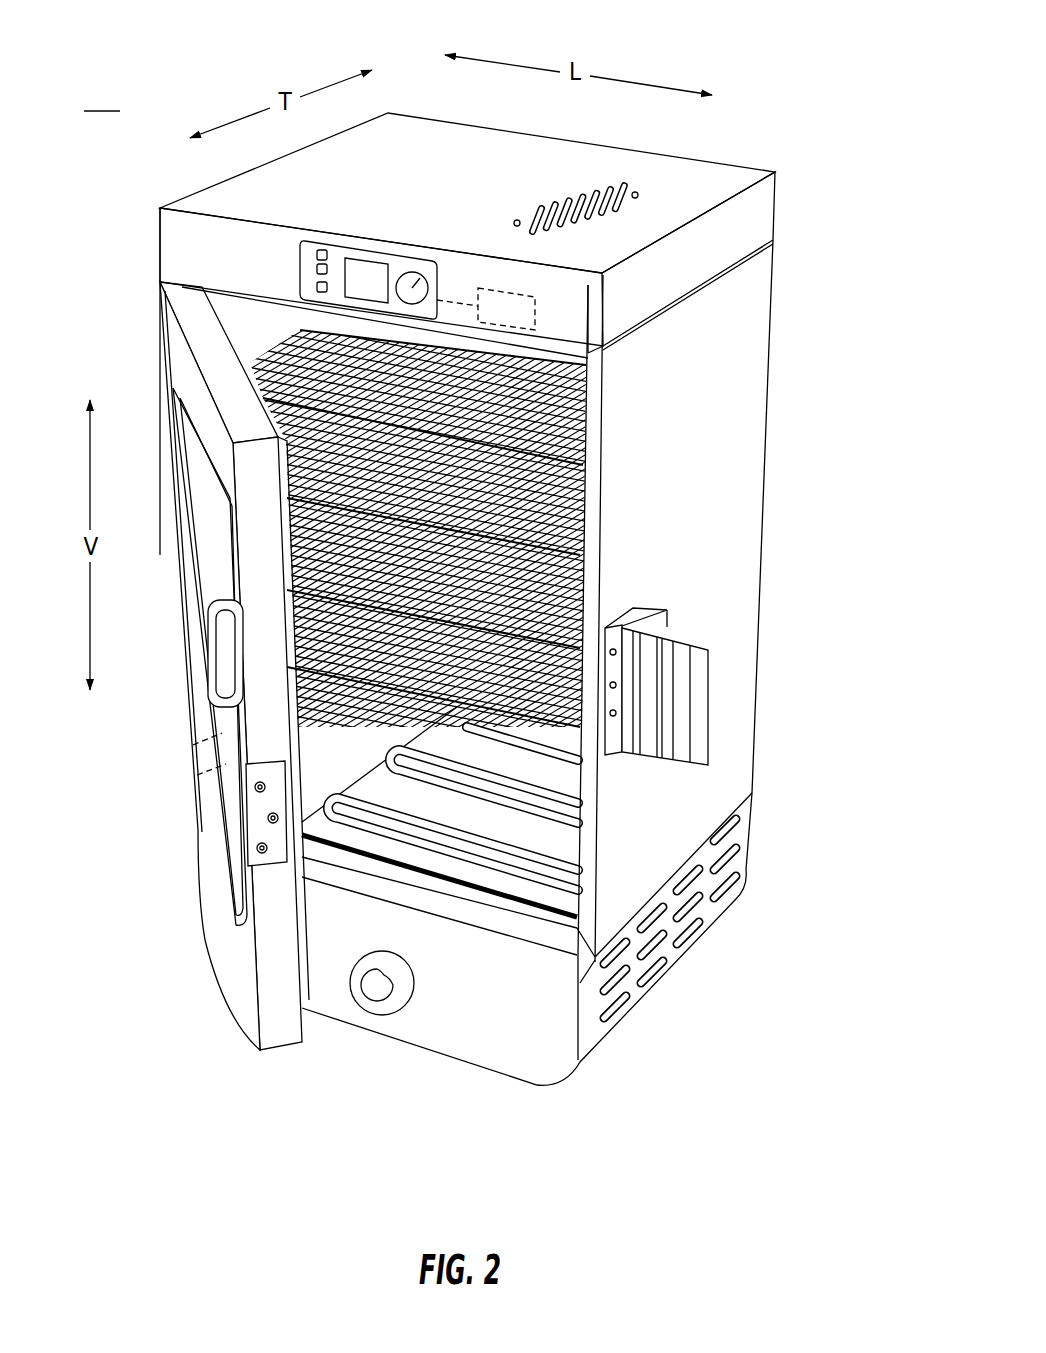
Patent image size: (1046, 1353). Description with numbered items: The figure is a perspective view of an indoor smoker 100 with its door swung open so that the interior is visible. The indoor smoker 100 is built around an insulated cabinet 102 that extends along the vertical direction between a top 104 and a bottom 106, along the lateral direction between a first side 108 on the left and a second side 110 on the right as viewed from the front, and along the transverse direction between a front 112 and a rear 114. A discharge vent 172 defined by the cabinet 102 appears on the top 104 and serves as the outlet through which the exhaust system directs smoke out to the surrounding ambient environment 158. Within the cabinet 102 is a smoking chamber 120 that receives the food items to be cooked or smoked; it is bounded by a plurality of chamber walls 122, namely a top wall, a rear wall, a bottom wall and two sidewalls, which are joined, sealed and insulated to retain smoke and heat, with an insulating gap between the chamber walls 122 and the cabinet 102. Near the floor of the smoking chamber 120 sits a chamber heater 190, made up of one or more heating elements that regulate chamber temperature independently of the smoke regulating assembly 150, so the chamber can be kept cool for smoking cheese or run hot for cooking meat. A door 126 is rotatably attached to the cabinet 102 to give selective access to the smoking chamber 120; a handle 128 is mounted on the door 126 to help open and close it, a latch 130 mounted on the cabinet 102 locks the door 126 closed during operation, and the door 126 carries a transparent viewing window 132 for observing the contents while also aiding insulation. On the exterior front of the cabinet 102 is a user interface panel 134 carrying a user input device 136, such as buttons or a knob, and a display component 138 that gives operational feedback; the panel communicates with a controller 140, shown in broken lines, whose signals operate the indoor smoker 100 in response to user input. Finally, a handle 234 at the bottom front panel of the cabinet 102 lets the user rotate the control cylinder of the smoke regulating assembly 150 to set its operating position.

The indoor smoker 100 is at (776, 52).
The insulated cabinet 102 is at (740, 383).
The top 104 is at (705, 168).
The bottom 106 is at (470, 1070).
The first side 108 is at (155, 249).
The second side 110 is at (748, 548).
The front 112 is at (205, 245).
The rear 114 is at (780, 280).
The smoking chamber 120 is at (362, 727).
The chamber walls 122 is at (240, 322).
The door 126 is at (197, 331).
The handle 128 is at (215, 636).
The latch 130 is at (712, 662).
The transparent viewing window 132 is at (238, 802).
The user interface panel 134 is at (398, 242).
The user input device 136 is at (322, 250).
The display component 138 is at (378, 282).
The controller 140 is at (507, 297).
The smoke regulating assembly 150 is at (347, 990).
The ambient environment 158 is at (102, 97).
The discharge vent 172 is at (618, 193).
The chamber heater 190 is at (512, 872).
The handle 234 is at (378, 995).